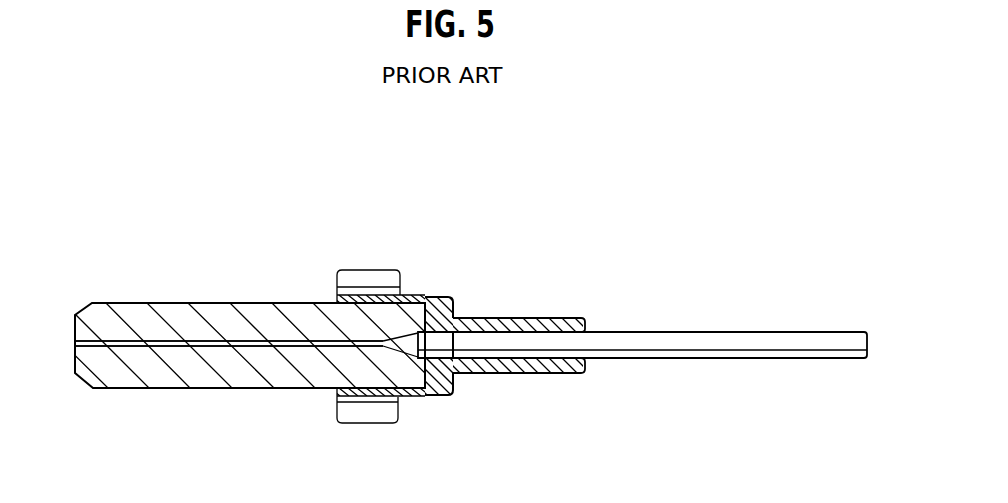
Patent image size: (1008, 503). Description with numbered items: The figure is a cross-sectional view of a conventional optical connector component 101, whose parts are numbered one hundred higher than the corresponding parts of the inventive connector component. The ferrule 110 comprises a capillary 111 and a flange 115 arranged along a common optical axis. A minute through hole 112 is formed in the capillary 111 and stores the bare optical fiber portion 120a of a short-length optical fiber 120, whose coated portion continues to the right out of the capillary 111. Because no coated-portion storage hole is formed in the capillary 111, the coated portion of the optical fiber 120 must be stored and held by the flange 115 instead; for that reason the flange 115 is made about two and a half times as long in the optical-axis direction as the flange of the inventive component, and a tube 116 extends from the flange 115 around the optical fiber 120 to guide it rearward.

The optical connector component 101 is at (580, 142).
The ferrule 110 is at (233, 193).
The capillary 111 is at (252, 300).
The minute through hole 112 is at (210, 343).
The flange 115 is at (424, 296).
The tube 116 is at (479, 350).
The short-length optical fiber 120 is at (678, 330).
The bare optical fiber portion 120a is at (155, 340).